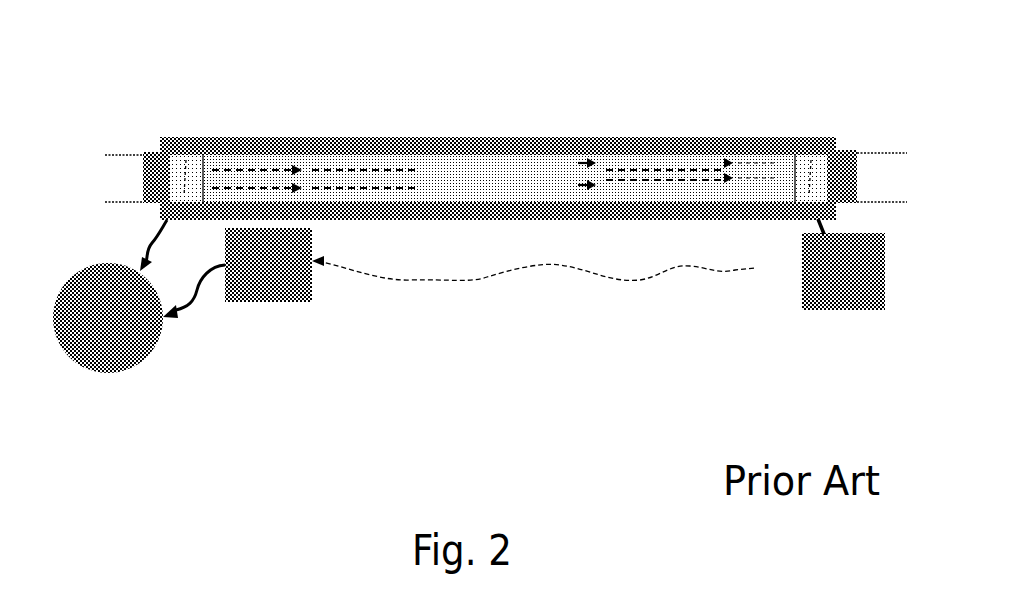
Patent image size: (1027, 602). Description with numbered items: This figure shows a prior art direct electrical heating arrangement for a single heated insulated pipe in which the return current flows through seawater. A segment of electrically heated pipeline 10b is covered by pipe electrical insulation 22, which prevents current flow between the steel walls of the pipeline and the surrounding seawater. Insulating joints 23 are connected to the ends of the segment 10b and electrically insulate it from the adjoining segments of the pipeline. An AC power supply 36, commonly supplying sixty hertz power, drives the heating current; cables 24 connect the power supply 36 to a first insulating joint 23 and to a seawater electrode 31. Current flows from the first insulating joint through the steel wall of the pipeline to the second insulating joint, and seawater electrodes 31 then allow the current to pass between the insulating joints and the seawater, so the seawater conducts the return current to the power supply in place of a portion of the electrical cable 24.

The segment of electrically heated pipeline 10b is at (712, 101).
The pipe electrical insulation 22 is at (496, 137).
The insulating joints 23 is at (176, 137).
The cable 24 is at (143, 245).
The seawater electrodes 31 is at (730, 315).
The AC power supply 36 is at (113, 268).